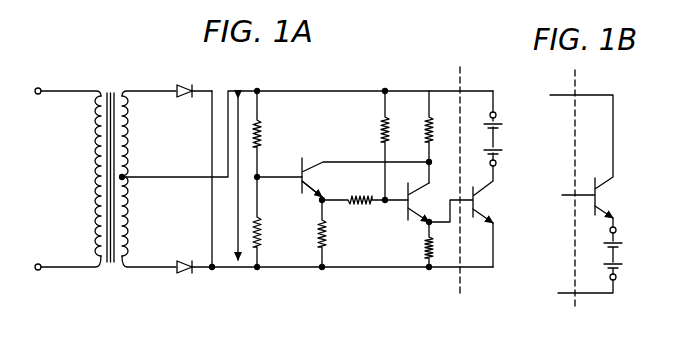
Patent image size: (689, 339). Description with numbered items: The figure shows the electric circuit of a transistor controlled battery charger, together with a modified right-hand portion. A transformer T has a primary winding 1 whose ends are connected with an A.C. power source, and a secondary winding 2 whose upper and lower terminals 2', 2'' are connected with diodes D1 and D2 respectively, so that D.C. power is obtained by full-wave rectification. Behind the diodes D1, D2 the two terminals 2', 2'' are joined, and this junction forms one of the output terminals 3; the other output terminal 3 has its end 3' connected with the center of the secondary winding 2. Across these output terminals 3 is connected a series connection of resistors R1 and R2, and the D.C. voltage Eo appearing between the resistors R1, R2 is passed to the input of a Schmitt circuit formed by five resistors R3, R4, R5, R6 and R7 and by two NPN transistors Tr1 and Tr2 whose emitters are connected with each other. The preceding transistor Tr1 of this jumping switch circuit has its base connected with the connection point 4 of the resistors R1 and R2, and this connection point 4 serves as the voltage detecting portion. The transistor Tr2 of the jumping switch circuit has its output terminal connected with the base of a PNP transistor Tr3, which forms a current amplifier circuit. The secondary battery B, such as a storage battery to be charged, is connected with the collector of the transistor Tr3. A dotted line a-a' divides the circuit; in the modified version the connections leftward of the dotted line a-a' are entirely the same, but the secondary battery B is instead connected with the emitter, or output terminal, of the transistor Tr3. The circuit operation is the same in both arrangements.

In FIG. 1A, the primary winding 1 is at (92, 165).
In FIG. 1A, the secondary winding 2 is at (142, 176).
In FIG. 1A, the upper terminal of secondary winding 2' is at (149, 73).
In FIG. 1A, the lower terminal of secondary winding 2'' is at (149, 281).
In FIG. 1A, the output terminals 3 is at (352, 286).
In FIG. 1A, the end of output terminal 3' is at (307, 136).
In FIG. 1A, the connection point 4 is at (257, 177).
In FIG. 1A, the transformer T is at (110, 91).
In FIG. 1A, the diode D1 is at (192, 79).
In FIG. 1A, the diode D2 is at (194, 255).
In FIG. 1A, the resistor R1 is at (269, 133).
In FIG. 1A, the resistor R2 is at (269, 223).
In FIG. 1A, the resistor R3 is at (333, 233).
In FIG. 1A, the resistor R4 is at (365, 192).
In FIG. 1A, the resistor R5 is at (370, 145).
In FIG. 1A, the resistor R6 is at (440, 137).
In FIG. 1A, the resistor R7 is at (440, 246).
In FIG. 1A, the transistor Tr1 is at (320, 172).
In FIG. 1A, the transistor Tr2 is at (423, 212).
In FIG. 1A, the transistor Tr3 is at (483, 204).
In FIG. 1B, the transistor Tr3 is at (595, 161).
In FIG. 1A, the secondary battery B is at (499, 128).
In FIG. 1B, the secondary battery B is at (598, 260).
In FIG. 1A, the D.C. voltage Eo is at (233, 179).
In FIG. 1A, the section line end a is at (460, 169).
In FIG. 1B, the section line end a is at (573, 179).
In FIG. 1A, the section line end a' is at (465, 304).
In FIG. 1B, the section line end a' is at (583, 316).